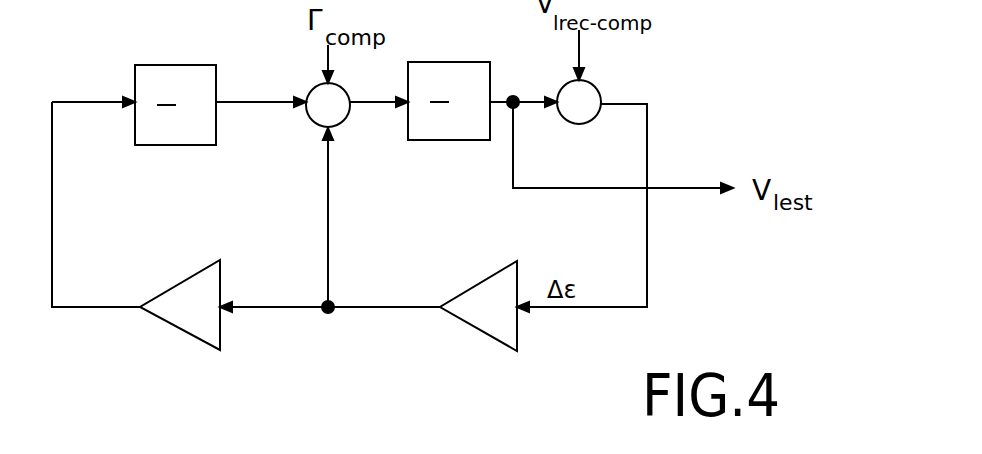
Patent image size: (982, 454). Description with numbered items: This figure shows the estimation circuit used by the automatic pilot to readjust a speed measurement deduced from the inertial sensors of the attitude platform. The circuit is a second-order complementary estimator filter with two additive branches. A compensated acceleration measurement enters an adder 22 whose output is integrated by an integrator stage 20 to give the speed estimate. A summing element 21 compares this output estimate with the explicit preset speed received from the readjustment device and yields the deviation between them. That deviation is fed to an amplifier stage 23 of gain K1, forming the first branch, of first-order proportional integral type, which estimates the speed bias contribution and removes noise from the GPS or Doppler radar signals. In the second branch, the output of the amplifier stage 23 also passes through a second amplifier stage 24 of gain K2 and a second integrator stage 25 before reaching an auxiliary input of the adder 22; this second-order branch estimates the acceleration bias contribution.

The integrator stage 20 is at (452, 61).
The summer 21 is at (601, 92).
The adder 22 is at (313, 80).
The amplifier stage 23 is at (508, 327).
The second amplifier stage 24 is at (210, 328).
The second integrator stage 25 is at (143, 82).